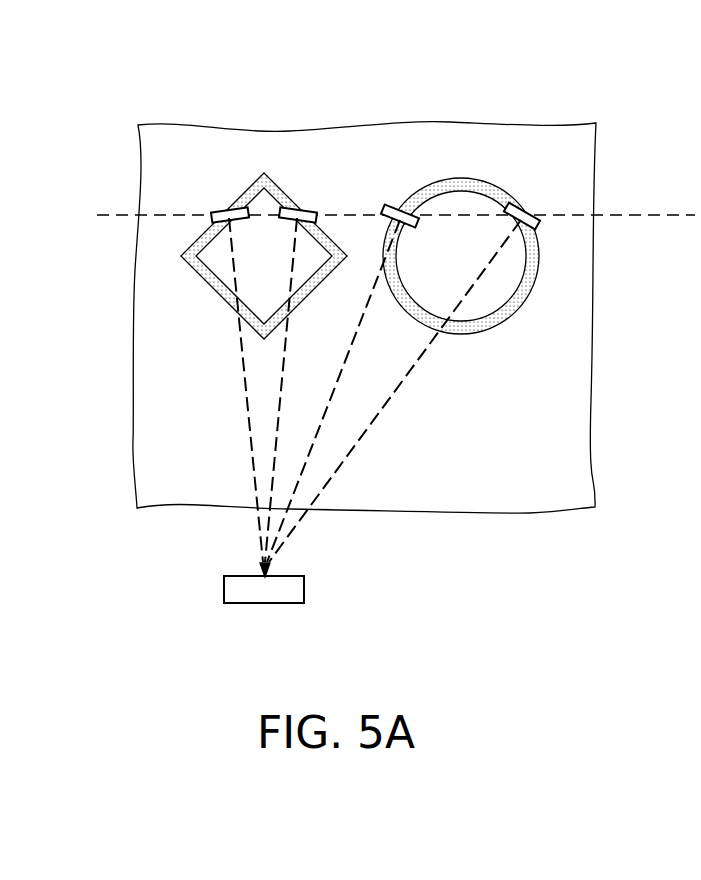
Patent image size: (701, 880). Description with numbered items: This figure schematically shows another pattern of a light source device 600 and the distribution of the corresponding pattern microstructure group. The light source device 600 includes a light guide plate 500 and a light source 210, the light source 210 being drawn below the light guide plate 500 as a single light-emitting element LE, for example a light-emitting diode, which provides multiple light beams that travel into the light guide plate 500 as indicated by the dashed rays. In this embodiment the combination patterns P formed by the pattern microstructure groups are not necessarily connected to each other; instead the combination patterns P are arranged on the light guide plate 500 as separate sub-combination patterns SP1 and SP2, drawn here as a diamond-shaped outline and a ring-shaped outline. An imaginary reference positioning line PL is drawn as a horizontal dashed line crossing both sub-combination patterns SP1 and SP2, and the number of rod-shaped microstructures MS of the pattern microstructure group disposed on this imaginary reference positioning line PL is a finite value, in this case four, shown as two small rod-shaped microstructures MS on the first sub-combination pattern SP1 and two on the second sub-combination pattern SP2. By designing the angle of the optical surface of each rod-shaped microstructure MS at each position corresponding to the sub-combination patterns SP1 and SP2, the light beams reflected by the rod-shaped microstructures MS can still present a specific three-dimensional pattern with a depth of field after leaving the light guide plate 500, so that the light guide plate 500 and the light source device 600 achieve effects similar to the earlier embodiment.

The light guide plate 500 is at (575, 165).
The light source device 600 is at (654, 567).
The light source 210 is at (248, 610).
The light-emitting element LE is at (270, 588).
The rod-shaped microstructure MS is at (537, 226).
The imaginary reference positioning line PL is at (378, 215).
The combination pattern P is at (360, 178).
The first sub-combination pattern SP1 is at (279, 186).
The second sub-combination pattern SP2 is at (438, 180).